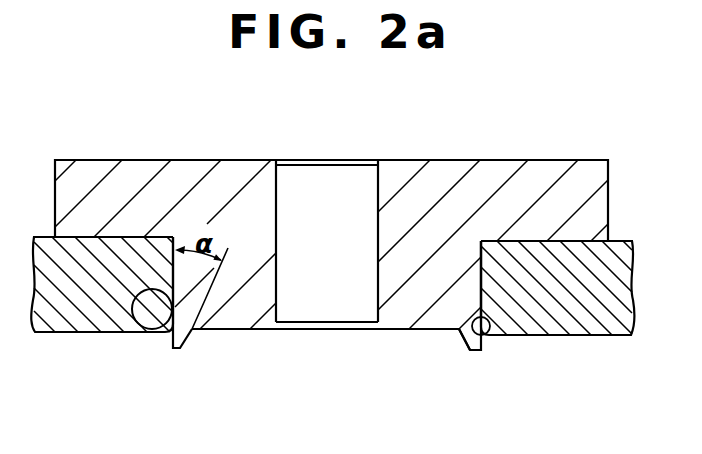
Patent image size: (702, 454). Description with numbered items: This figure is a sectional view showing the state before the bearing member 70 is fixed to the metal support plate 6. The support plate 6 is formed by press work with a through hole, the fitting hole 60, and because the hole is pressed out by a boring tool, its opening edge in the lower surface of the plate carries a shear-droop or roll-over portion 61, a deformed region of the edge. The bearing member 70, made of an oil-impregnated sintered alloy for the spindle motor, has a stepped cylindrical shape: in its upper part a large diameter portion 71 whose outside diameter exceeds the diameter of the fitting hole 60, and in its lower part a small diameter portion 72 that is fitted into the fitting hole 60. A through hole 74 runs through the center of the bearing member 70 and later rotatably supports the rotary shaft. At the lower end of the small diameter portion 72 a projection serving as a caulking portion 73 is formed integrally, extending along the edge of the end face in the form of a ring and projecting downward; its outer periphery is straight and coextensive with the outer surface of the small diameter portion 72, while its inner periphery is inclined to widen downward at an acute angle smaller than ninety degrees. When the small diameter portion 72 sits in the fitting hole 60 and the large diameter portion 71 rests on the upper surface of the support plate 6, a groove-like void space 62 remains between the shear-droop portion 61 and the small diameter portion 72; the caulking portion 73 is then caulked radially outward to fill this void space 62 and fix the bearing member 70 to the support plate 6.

The metal support plate 6 is at (592, 336).
The fitting hole 60 is at (480, 292).
The shear-droop portion 61 is at (463, 333).
The void space 62 is at (485, 337).
The bearing member 70 is at (169, 159).
The large diameter portion 71 is at (514, 161).
The small diameter portion 72 is at (135, 333).
The caulking portion 73 is at (177, 350).
The through hole 74 is at (333, 173).